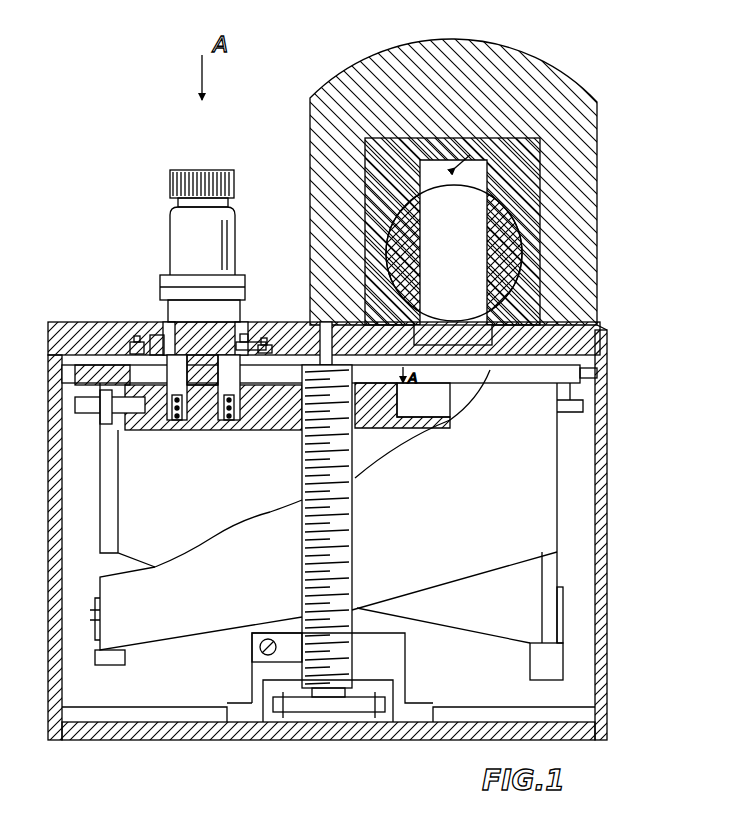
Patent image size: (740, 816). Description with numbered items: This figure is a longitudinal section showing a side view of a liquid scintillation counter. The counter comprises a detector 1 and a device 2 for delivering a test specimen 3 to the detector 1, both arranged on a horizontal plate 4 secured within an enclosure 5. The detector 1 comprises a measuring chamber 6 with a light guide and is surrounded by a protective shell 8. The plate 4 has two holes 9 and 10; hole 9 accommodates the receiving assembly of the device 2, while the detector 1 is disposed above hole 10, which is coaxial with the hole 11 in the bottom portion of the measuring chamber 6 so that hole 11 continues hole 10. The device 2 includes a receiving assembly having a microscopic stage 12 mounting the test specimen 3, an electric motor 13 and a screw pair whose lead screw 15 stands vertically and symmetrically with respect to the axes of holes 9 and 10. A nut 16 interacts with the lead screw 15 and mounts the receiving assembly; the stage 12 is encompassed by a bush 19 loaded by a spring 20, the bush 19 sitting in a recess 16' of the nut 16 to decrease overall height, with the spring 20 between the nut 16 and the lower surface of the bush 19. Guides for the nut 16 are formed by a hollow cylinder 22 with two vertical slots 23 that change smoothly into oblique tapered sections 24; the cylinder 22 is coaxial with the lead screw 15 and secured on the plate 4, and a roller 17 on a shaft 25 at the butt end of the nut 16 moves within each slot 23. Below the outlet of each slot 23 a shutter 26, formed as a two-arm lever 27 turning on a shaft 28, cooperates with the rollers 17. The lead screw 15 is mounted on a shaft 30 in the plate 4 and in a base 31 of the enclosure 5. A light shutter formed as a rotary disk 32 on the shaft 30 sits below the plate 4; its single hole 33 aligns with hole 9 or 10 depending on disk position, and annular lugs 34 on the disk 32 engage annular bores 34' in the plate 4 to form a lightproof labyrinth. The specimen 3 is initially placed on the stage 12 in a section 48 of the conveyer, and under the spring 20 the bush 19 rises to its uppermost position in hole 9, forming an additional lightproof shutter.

The detector 1 is at (566, 66).
The device for delivering a test specimen 2 is at (570, 478).
The test specimen 3 is at (172, 222).
The horizontal plate 4 is at (73, 332).
The enclosure 5 is at (48, 478).
The measuring chamber 6 is at (545, 150).
The protective shell 8 is at (583, 166).
The hole 9 is at (158, 338).
The hole 10 is at (483, 345).
The hole 11 is at (481, 323).
The microscopic stage 12 is at (242, 334).
The electric motor 13 is at (380, 617).
The lead screw 15 is at (340, 483).
The nut 16 is at (402, 423).
The recess 16' is at (422, 424).
The rollers 17 is at (113, 475).
The bush 19 is at (160, 428).
The spring 20 is at (180, 428).
The hollow cylinder 22 is at (558, 520).
The vertical slots 23 is at (556, 566).
The oblique tapered sections 24 is at (175, 628).
The shaft 25 is at (94, 414).
The shutter 26 is at (564, 667).
The two-arm lever 27 is at (96, 612).
The shaft 28 is at (563, 626).
The shaft 30 is at (323, 325).
The base 31 is at (355, 740).
The rotary disk 32 is at (423, 400).
The hole 33 is at (246, 428).
The annular lugs 34 is at (118, 323).
The annular bores 34' is at (279, 321).
The section of the conveyer 48 is at (233, 284).